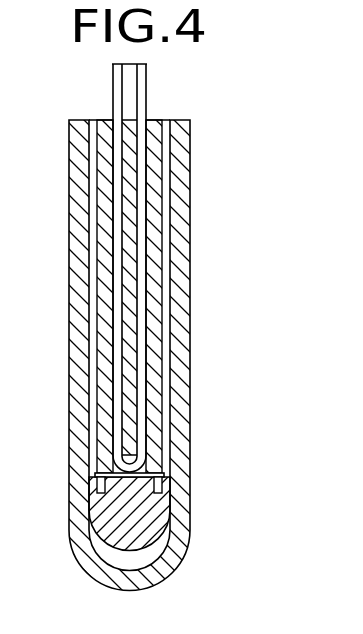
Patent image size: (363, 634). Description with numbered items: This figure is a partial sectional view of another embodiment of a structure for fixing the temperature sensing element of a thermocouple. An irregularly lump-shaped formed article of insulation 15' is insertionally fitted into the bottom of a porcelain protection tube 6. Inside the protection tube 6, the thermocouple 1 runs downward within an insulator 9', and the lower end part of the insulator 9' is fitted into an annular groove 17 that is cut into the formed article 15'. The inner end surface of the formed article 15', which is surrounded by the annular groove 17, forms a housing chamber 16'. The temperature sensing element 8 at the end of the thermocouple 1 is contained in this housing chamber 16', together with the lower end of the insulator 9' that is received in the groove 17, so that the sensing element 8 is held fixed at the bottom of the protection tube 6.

The thermocouple 1 is at (138, 97).
The insulator 9' is at (171, 296).
The porcelain protection tube 6 is at (190, 322).
The temperature sensing element 8 is at (97, 468).
The annular groove 17 is at (97, 482).
The housing chamber 16' is at (200, 473).
The formed article of insulation 15' is at (138, 550).